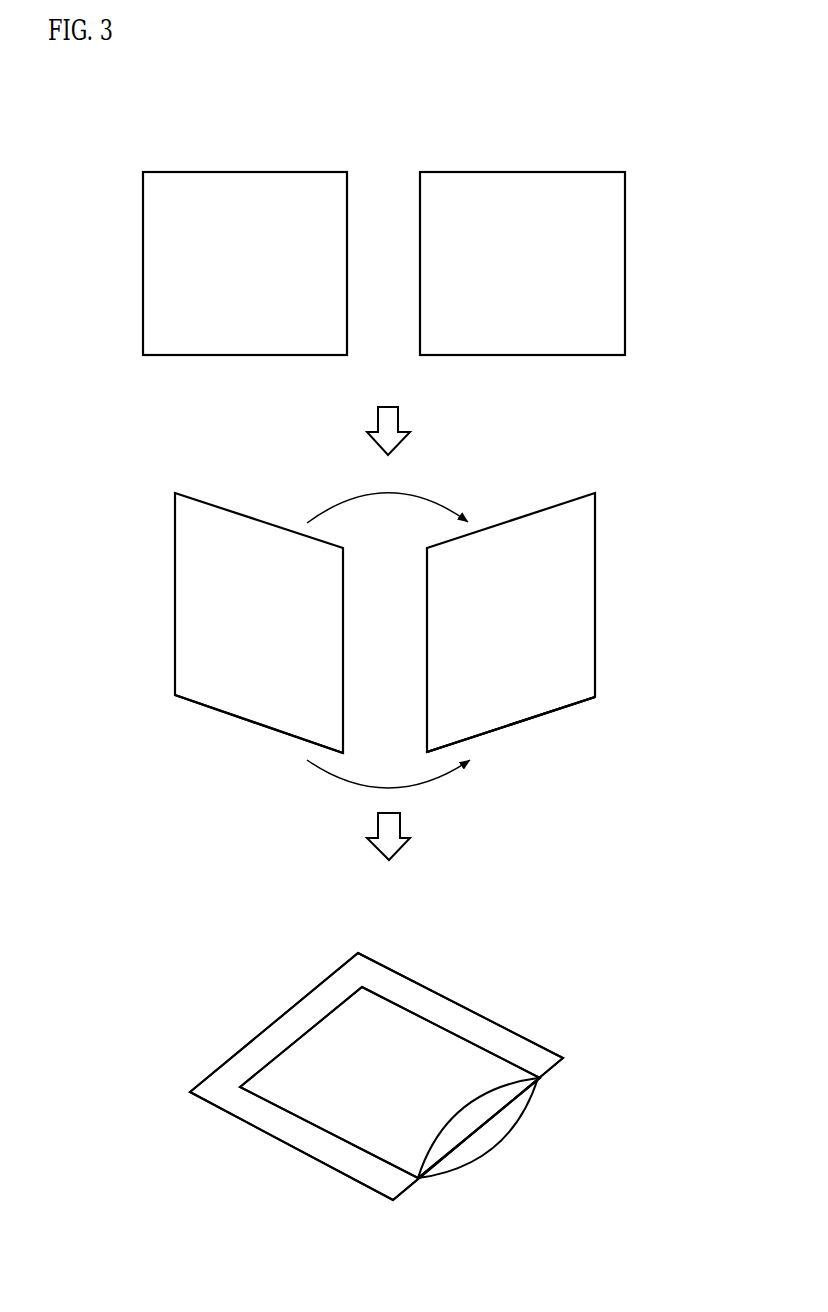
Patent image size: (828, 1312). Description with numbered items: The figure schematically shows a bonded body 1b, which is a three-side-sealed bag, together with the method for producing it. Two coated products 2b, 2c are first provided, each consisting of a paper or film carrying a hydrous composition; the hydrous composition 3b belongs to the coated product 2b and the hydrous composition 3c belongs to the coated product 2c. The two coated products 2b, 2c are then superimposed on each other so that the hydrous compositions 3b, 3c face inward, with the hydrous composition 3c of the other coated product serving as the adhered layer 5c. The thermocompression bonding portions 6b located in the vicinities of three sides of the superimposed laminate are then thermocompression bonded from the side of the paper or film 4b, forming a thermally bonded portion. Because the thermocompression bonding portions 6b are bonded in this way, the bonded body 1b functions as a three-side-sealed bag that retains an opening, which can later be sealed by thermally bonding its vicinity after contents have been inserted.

The bonded body 1b is at (382, 940).
The coated product 2b is at (355, 147).
The coated product 2c is at (633, 148).
The hydrous composition 3b is at (240, 333).
The hydrous composition 3c is at (518, 335).
The adhered layer 5c is at (522, 563).
The paper or film 4b is at (413, 1042).
The thermocompression bonding portion 6b is at (288, 1038).